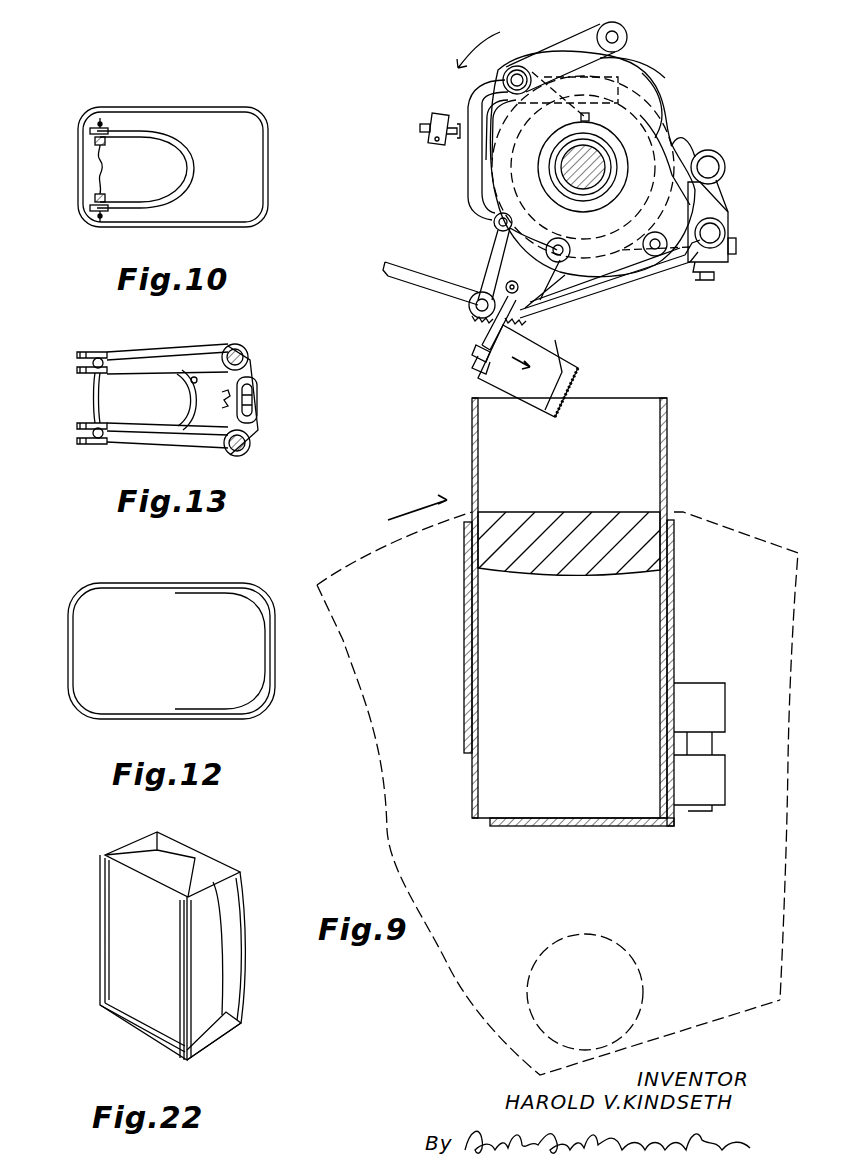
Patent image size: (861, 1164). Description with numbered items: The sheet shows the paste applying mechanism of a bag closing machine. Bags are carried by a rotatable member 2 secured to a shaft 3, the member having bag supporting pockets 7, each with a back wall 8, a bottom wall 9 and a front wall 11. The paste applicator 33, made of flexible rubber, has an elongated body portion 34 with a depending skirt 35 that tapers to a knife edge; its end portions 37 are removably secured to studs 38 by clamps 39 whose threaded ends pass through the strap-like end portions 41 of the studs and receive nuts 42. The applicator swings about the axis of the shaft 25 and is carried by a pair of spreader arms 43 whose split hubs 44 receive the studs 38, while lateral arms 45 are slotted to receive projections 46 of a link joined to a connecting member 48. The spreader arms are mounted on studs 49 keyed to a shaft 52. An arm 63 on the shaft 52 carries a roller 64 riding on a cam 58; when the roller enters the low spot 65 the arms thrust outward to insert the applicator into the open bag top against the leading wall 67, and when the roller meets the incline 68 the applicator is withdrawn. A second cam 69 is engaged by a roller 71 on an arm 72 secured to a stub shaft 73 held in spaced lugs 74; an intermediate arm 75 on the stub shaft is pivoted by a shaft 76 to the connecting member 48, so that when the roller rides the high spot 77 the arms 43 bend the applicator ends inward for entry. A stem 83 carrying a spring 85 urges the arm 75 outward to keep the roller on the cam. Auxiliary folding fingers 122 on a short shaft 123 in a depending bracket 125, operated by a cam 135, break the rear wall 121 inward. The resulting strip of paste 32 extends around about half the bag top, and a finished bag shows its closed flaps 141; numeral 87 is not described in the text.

In FIG. 9, the rotatable member 2 is at (373, 555).
In FIG. 9, the shaft 3 is at (620, 945).
In FIG. 9, the bag supporting member or pocket 7 is at (462, 660).
In FIG. 9, the back wall 8 is at (464, 691).
In FIG. 9, the bottom wall 9 is at (582, 826).
In FIG. 9, the front wall 11 is at (674, 628).
In FIG. 9, the shaft 25 is at (575, 158).
In FIG. 12, the strip of paste 32 is at (213, 593).
In FIG. 10, the paste applicator 33 is at (195, 158).
In FIG. 13, the paste applicator 33 is at (194, 377).
In FIG. 9, the paste applicator 33 is at (578, 372).
In FIG. 10, the body portion 34 is at (187, 165).
In FIG. 13, the body portion 34 is at (180, 398).
In FIG. 10, the skirt 35 is at (188, 145).
In FIG. 10, the end portions 37 is at (90, 131).
In FIG. 13, the end portions 37 is at (222, 400).
In FIG. 9, the end portions 37 is at (476, 345).
In FIG. 13, the studs 38 is at (98, 358).
In FIG. 10, the clamps 39 is at (100, 118).
In FIG. 9, the clamps 39 is at (492, 348).
In FIG. 10, the strap-like end portions 41 is at (95, 141).
In FIG. 9, the strap-like end portions 41 is at (472, 362).
In FIG. 10, the nuts 42 is at (106, 163).
In FIG. 13, the spreader arms 43 is at (150, 349).
In FIG. 9, the spreader arms 43 is at (600, 298).
In FIG. 13, the split hubs 44 is at (94, 398).
In FIG. 13, the lateral arms 45 is at (252, 362).
In FIG. 13, the projections 46 is at (257, 396).
In FIG. 9, the connecting member 48 is at (620, 252).
In FIG. 13, the studs 49 is at (242, 350).
In FIG. 9, the studs 49 is at (690, 276).
In FIG. 9, the shaft 52 is at (720, 232).
In FIG. 9, the cam 58 is at (662, 120).
In FIG. 9, the arm 63 is at (728, 205).
In FIG. 9, the roller 64 is at (725, 167).
In FIG. 9, the low spot 65 is at (665, 135).
In FIG. 10, the leading wall 67 is at (268, 168).
In FIG. 12, the leading wall 67 is at (275, 648).
In FIG. 9, the leading wall 67 is at (667, 430).
In FIG. 9, the incline 68 is at (660, 100).
In FIG. 9, the cam 69 is at (640, 70).
In FIG. 9, the roller 71 is at (622, 28).
In FIG. 9, the arm 72 is at (570, 38).
In FIG. 9, the stub shaft 73 is at (520, 72).
In FIG. 9, the lugs 74 is at (507, 76).
In FIG. 9, the intermediate arm 75 is at (478, 85).
In FIG. 9, the shaft 76 is at (494, 226).
In FIG. 9, the high spot 77 is at (630, 70).
In FIG. 9, the stem 83 is at (420, 128).
In FIG. 9, the spring 85 is at (487, 160).
In FIG. 9, the stop block 87 is at (438, 114).
In FIG. 10, the rear wall 121 is at (83, 160).
In FIG. 12, the rear wall 121 is at (73, 655).
In FIG. 9, the rear wall 121 is at (472, 430).
In FIG. 9, the auxiliary folding fingers 122 is at (395, 272).
In FIG. 9, the short shaft 123 is at (470, 310).
In FIG. 9, the depending bracket 125 is at (485, 268).
In FIG. 9, the cam 135 is at (568, 298).
In FIG. 22, the flaps 141 is at (160, 864).